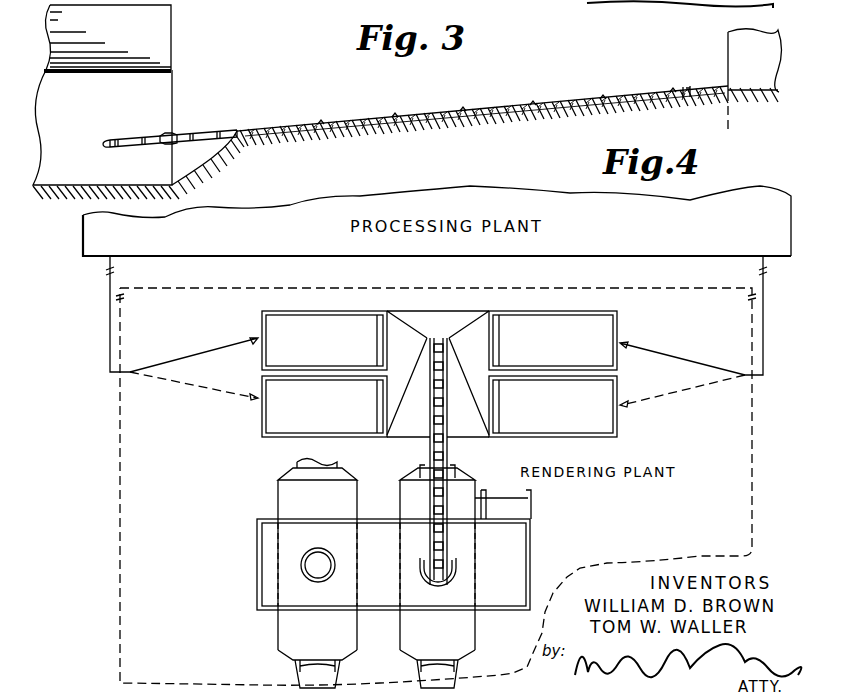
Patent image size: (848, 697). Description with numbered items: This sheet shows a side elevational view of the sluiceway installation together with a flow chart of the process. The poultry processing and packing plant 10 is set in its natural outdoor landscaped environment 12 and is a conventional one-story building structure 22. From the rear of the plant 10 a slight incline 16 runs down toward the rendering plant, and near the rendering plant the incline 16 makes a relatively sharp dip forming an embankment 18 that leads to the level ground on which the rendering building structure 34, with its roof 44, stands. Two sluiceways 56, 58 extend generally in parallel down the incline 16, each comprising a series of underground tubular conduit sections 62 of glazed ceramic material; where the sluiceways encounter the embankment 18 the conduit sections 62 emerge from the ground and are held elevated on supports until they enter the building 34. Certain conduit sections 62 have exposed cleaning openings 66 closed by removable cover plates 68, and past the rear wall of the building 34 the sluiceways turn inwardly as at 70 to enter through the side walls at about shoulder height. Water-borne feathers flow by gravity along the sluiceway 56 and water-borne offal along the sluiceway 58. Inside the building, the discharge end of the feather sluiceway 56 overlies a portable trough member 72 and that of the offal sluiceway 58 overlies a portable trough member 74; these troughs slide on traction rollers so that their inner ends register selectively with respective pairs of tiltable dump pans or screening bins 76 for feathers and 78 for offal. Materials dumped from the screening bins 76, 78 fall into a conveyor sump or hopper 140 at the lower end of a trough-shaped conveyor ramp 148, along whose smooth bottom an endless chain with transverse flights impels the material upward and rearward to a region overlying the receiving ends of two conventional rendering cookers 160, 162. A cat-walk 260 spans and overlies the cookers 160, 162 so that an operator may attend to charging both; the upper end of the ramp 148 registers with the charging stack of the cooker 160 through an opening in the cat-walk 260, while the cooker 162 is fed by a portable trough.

In FIG. 3, the poultry processing and packing plant 10 is at (700, 52).
In FIG. 3, the natural outdoor landscaped environment 12 is at (226, 46).
In FIG. 3, the slight incline 16 is at (488, 104).
In FIG. 3, the embankment 18 is at (209, 155).
In FIG. 3, the building structure 22 is at (763, 61).
In FIG. 3, the building structure 34 is at (92, 98).
In FIG. 3, the roof 44 is at (160, 32).
In FIG. 3, the underground tubular conduit sections 62 is at (410, 112).
In FIG. 3, the cleaning openings 66 is at (160, 138).
In FIG. 3, the removable cover plates 68 is at (168, 134).
In FIG. 3, the inward turn of sluiceways 70 is at (102, 143).
In FIG. 4, the sluiceway 56 is at (758, 356).
In FIG. 4, the sluiceway 58 is at (113, 357).
In FIG. 4, the portable trough member 72 is at (652, 350).
In FIG. 4, the portable trough member 74 is at (184, 360).
In FIG. 4, the tiltable dump pans or screening bins 76 is at (528, 352).
In FIG. 4, the tiltable dump pans or screening bins 78 is at (362, 352).
In FIG. 4, the conveyor sump or hopper 140 is at (422, 423).
In FIG. 4, the conveyor ramp 148 is at (426, 450).
In FIG. 4, the rendering cooker 160 is at (450, 635).
In FIG. 4, the rendering cooker 162 is at (330, 635).
In FIG. 4, the cat-walk 260 is at (262, 586).